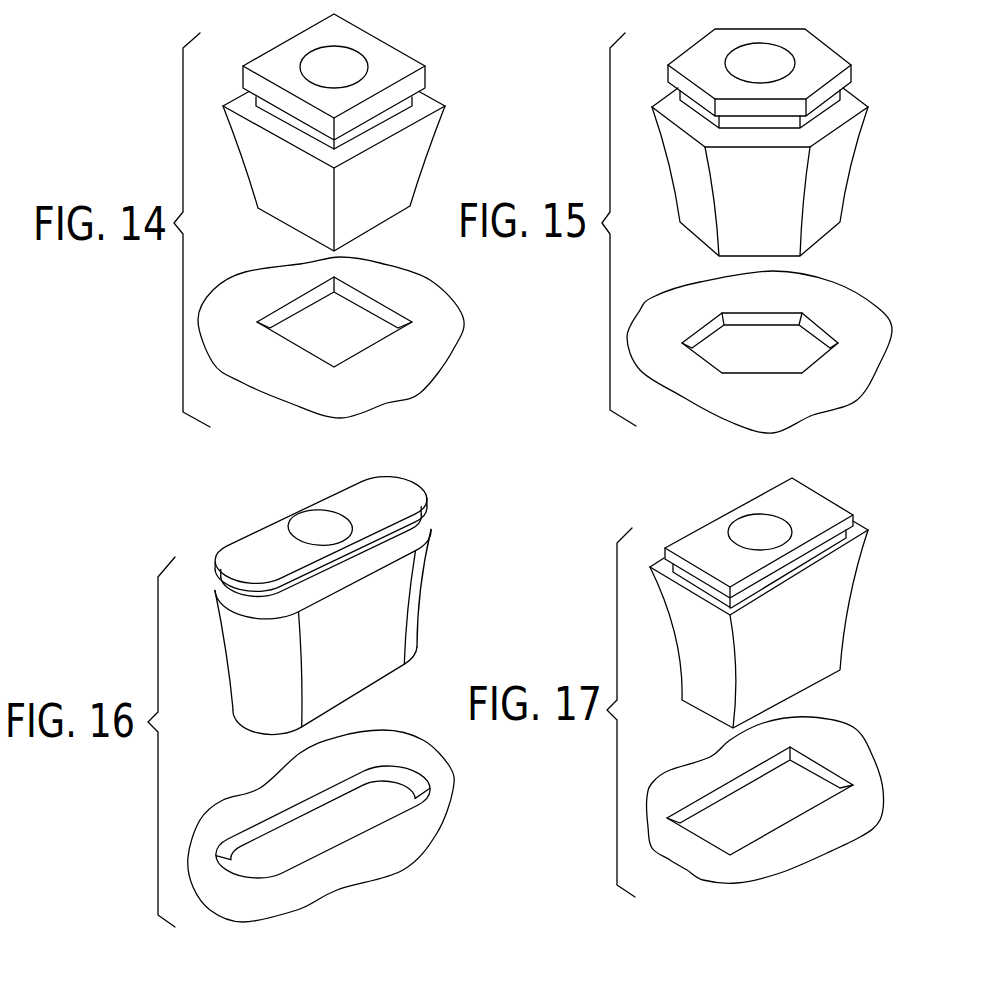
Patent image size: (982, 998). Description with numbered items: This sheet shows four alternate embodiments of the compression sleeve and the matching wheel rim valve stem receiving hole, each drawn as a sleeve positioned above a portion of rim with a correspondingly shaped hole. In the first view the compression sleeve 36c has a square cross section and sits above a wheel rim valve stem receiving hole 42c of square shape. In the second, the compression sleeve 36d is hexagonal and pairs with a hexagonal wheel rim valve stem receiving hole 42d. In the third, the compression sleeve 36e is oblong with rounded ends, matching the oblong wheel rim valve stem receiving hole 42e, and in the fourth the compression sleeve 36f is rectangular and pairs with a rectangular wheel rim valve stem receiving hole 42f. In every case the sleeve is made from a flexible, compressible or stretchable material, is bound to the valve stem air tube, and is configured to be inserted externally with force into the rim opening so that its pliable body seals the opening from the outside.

In FIG. 14, the compression sleeve 36c is at (422, 145).
In FIG. 14, the wheel rim valve stem receiving hole 42c is at (308, 352).
In FIG. 15, the compression sleeve 36d is at (672, 160).
In FIG. 15, the wheel rim valve stem receiving hole 42d is at (707, 362).
In FIG. 16, the compression sleeve 36e is at (428, 493).
In FIG. 16, the wheel rim valve stem receiving hole 42e is at (393, 815).
In FIG. 17, the compression sleeve 36f is at (830, 498).
In FIG. 17, the wheel rim valve stem receiving hole 42f is at (822, 765).